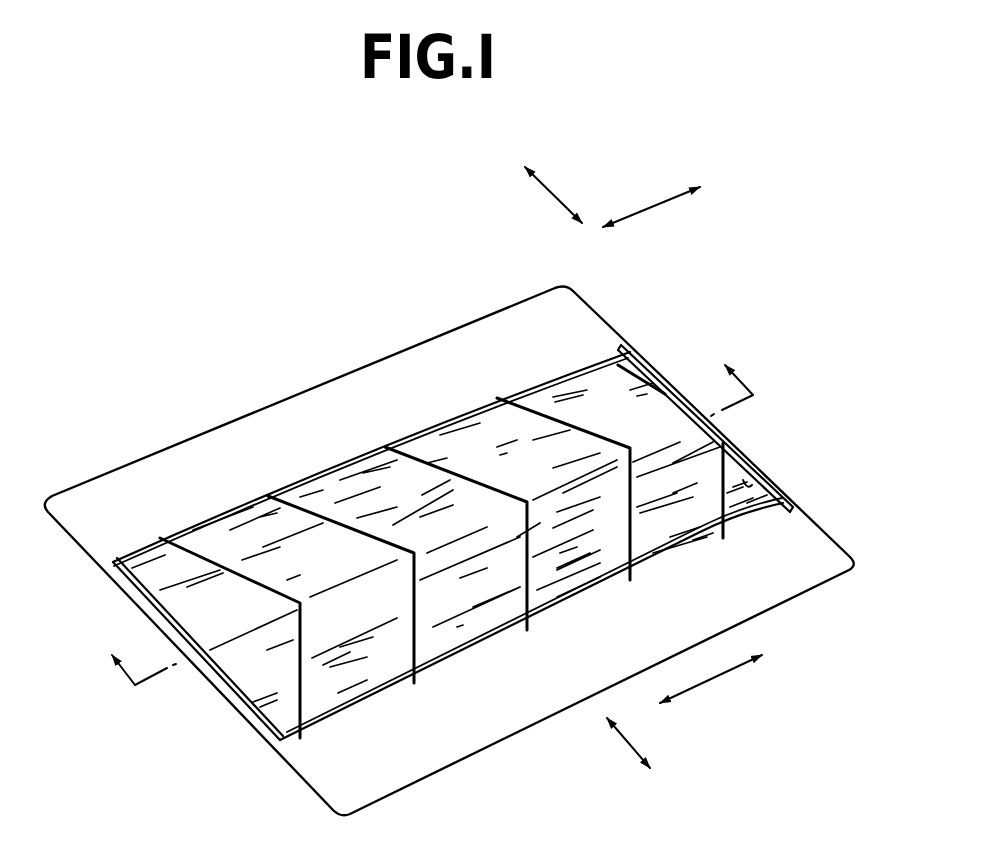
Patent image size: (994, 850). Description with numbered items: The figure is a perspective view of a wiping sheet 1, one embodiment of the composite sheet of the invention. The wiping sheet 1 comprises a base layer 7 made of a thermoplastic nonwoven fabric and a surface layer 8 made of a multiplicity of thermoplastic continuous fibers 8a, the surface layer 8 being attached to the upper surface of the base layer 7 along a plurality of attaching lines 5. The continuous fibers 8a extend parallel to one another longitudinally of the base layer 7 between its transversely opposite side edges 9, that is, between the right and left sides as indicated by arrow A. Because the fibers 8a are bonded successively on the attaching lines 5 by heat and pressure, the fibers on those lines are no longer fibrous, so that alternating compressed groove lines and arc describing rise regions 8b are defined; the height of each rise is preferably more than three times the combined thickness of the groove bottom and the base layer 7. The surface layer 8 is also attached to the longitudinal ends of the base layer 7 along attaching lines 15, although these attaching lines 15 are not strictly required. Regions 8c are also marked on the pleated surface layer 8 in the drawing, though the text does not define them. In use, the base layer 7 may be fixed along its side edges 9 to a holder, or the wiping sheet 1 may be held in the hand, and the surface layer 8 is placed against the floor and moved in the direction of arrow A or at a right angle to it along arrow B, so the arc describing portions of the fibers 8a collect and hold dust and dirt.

The wiping sheet 1 is at (343, 330).
The attaching lines 5 is at (445, 532).
The base layer 7 is at (818, 592).
The surface layer 8 is at (580, 378).
The continuous fibers 8a is at (583, 548).
The arc describing rise regions 8b is at (358, 497).
The pleat side portion 8c is at (238, 508).
The side edges 9 is at (597, 333).
The attaching lines 15 is at (747, 483).